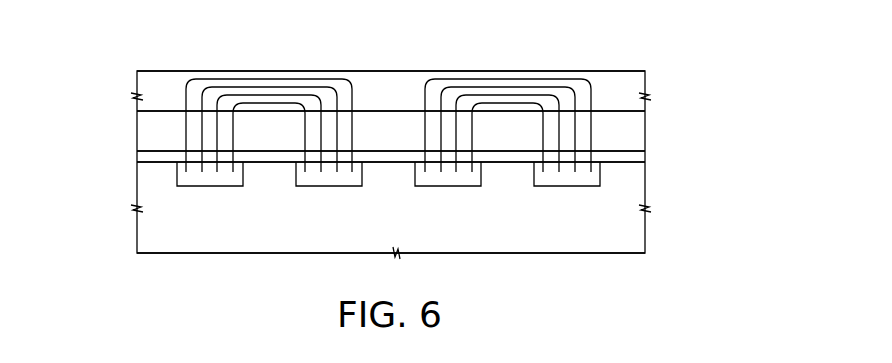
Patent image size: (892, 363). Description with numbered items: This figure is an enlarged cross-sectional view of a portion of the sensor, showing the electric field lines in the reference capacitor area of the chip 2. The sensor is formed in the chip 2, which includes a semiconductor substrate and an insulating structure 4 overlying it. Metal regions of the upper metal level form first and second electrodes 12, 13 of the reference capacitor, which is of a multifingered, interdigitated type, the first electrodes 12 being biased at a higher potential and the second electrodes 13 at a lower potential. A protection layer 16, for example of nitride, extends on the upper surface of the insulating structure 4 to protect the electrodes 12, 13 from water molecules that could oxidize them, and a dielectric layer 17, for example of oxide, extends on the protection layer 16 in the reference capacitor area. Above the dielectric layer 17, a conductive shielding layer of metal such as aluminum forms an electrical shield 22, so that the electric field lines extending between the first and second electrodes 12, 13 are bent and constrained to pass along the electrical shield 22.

The chip 2 is at (136, 190).
The insulating structure 4 is at (156, 248).
The first electrodes 12 is at (227, 183).
The second electrodes 13 is at (326, 176).
The protection layer 16 is at (643, 154).
The dielectric layer 17 is at (638, 128).
The electrical shield 22 is at (630, 84).